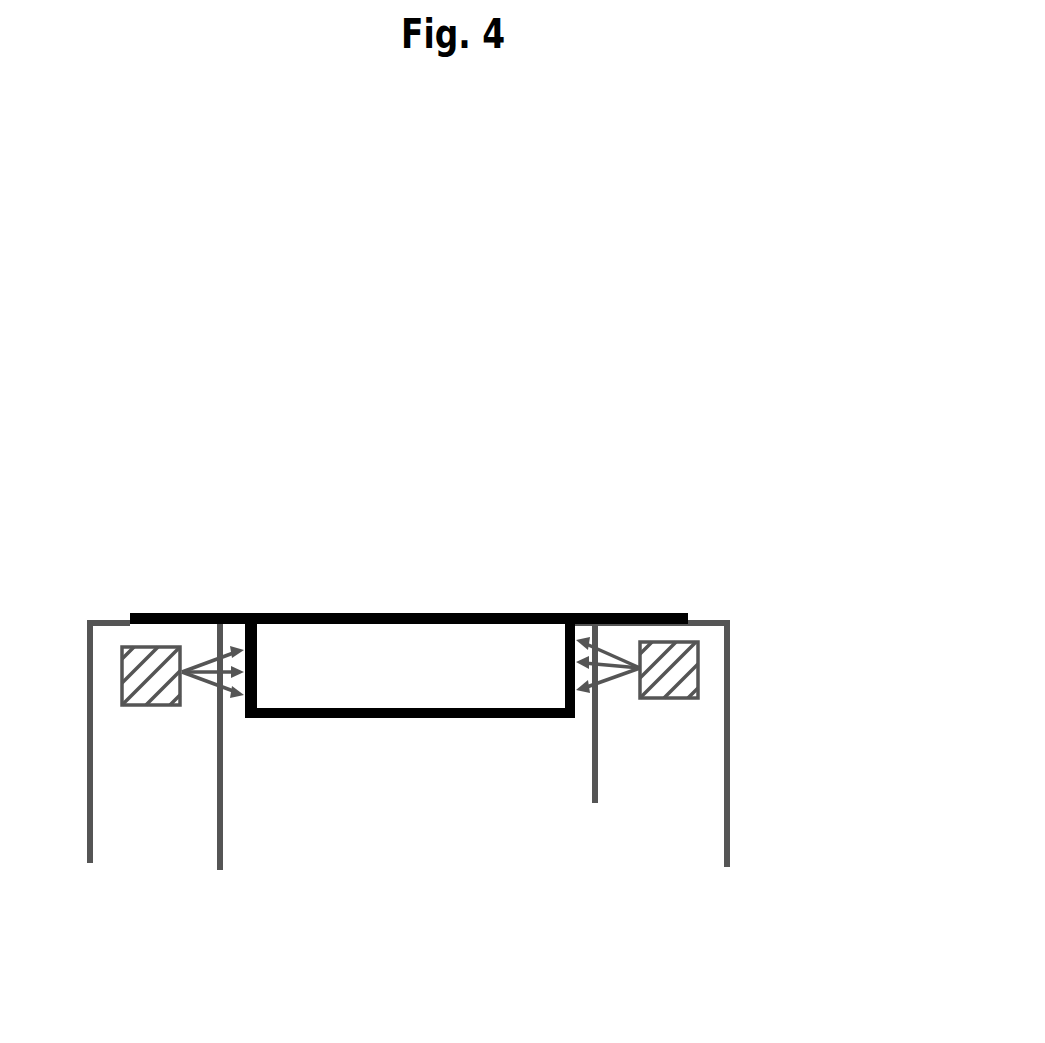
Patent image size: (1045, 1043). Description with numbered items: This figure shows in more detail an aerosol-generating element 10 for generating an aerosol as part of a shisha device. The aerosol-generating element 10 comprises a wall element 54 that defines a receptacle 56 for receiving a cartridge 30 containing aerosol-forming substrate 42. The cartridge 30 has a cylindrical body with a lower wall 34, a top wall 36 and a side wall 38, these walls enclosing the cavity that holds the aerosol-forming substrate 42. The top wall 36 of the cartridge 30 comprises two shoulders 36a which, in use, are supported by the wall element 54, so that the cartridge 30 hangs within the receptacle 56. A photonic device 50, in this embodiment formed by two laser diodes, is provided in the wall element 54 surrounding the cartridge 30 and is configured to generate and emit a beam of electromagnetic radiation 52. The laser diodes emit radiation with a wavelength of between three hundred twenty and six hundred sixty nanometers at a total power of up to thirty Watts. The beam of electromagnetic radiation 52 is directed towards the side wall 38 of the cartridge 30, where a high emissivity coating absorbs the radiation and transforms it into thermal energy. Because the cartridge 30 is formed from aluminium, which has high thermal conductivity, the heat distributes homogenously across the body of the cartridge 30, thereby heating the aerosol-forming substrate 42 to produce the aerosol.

The aerosol-generating element 10 is at (177, 414).
The cartridge 30 is at (463, 605).
The lower wall 34 is at (517, 723).
The top wall 36 is at (265, 615).
The shoulders 36a is at (163, 613).
The side wall 38 is at (268, 617).
The aerosol-forming substrate 42 is at (528, 648).
The photonic device 50 is at (668, 670).
The beam of electromagnetic radiation 52 is at (183, 672).
The wall element 54 is at (727, 803).
The receptacle 56 is at (446, 757).